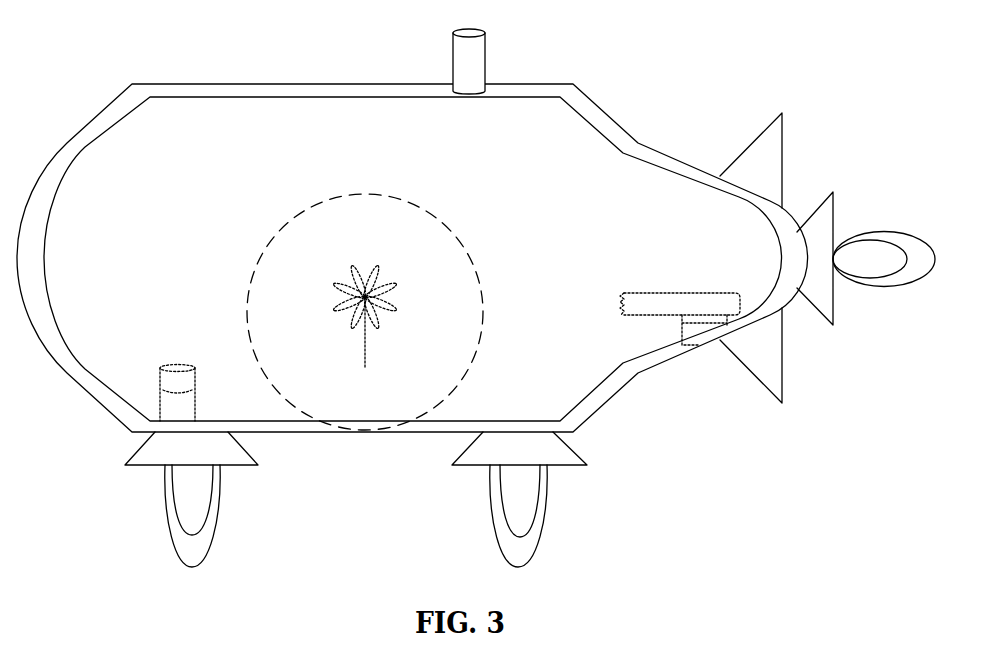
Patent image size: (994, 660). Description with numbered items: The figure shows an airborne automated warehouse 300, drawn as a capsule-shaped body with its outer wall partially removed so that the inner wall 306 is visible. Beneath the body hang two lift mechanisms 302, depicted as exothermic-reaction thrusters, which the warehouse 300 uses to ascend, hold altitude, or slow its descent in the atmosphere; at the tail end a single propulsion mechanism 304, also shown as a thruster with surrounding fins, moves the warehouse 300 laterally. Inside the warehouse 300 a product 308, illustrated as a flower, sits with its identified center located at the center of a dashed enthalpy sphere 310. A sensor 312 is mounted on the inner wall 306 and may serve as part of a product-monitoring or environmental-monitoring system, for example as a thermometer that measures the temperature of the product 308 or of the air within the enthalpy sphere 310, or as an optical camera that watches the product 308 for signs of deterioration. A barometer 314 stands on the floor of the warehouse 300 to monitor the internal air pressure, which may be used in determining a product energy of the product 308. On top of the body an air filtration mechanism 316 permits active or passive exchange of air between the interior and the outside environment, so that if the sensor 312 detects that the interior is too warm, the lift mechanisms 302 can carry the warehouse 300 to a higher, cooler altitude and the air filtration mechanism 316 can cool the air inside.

The airborne automated warehouse 300 is at (272, 92).
The lift mechanisms 302 is at (237, 455).
The propulsion mechanism 304 is at (832, 298).
The inner wall 306 is at (277, 156).
The product 308 is at (340, 289).
The enthalpy sphere 310 is at (453, 232).
The sensor 312 is at (660, 300).
The barometer 314 is at (168, 370).
The air filtration mechanism 316 is at (477, 68).